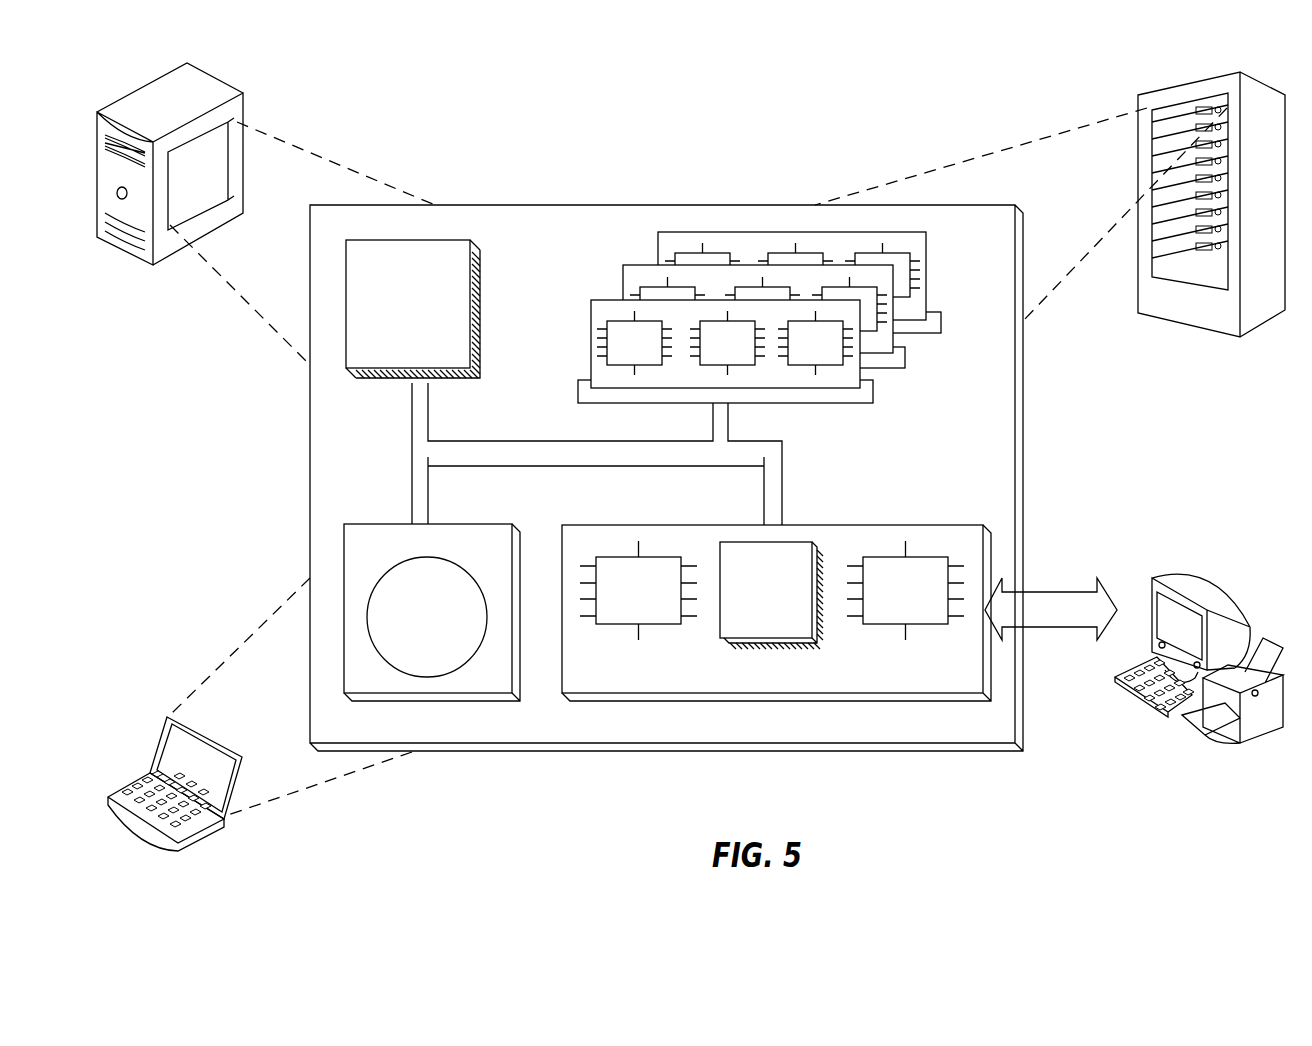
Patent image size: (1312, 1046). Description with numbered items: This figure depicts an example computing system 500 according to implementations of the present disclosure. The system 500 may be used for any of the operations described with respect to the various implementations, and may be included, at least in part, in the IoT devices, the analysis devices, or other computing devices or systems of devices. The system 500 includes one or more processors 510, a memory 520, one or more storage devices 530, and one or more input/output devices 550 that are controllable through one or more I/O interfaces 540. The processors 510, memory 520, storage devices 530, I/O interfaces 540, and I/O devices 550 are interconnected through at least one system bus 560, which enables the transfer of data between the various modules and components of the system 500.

The system 500 is at (538, 132).
The processors 510 is at (460, 361).
The memory 520 is at (933, 368).
The storage devices 530 is at (502, 685).
The I/O interfaces 540 is at (877, 683).
The input/output (I/O) devices 550 is at (1150, 582).
The system bus 560 is at (591, 457).